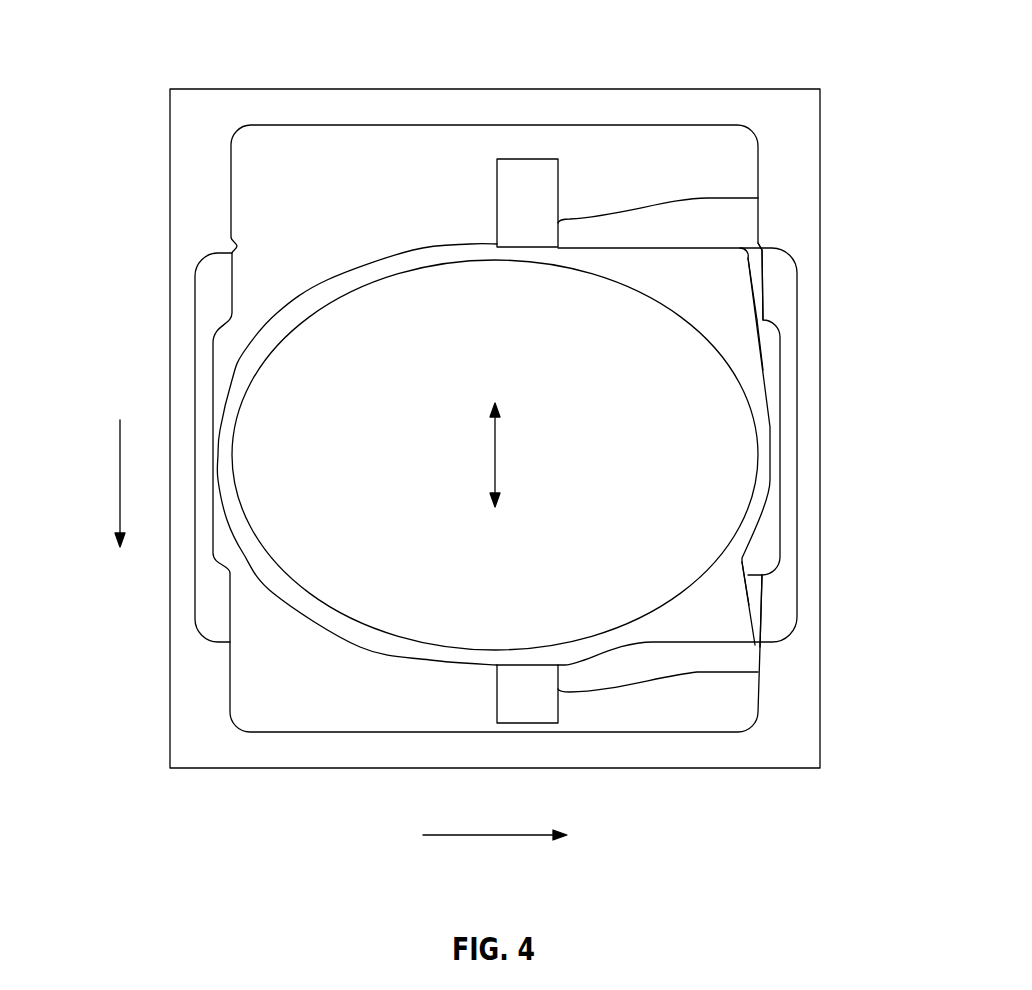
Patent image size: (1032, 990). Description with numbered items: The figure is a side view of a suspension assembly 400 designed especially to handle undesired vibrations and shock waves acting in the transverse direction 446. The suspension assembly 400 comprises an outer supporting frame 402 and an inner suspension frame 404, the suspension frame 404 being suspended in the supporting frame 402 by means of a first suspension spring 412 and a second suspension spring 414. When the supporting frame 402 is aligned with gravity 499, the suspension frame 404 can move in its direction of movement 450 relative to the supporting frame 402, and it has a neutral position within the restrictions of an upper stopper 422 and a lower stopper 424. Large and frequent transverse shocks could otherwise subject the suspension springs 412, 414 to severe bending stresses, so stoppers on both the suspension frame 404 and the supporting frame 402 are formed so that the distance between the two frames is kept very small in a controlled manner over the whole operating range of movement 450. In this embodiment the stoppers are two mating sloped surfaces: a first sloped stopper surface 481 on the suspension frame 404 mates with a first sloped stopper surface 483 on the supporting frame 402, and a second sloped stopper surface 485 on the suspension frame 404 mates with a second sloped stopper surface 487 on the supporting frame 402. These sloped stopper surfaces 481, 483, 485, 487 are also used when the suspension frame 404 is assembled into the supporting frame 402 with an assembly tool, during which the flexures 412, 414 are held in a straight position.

The suspension assembly 400 is at (332, 820).
The supporting frame 402 is at (806, 126).
The suspension frame 404 is at (577, 260).
The first suspension spring 412 is at (672, 198).
The second suspension spring 414 is at (695, 673).
The upper stopper 422 is at (525, 168).
The lower stopper 424 is at (521, 712).
The transverse direction 446 is at (455, 835).
The direction of movement 450 is at (497, 463).
The first sloped stopper surface on the suspension frame 481 is at (744, 288).
The first sloped stopper surface on the support frame 483 is at (760, 262).
The second sloped stopper surface on the suspension frame 485 is at (744, 603).
The second sloped stopper surface on the support frame 487 is at (760, 579).
The gravity 499 is at (118, 476).